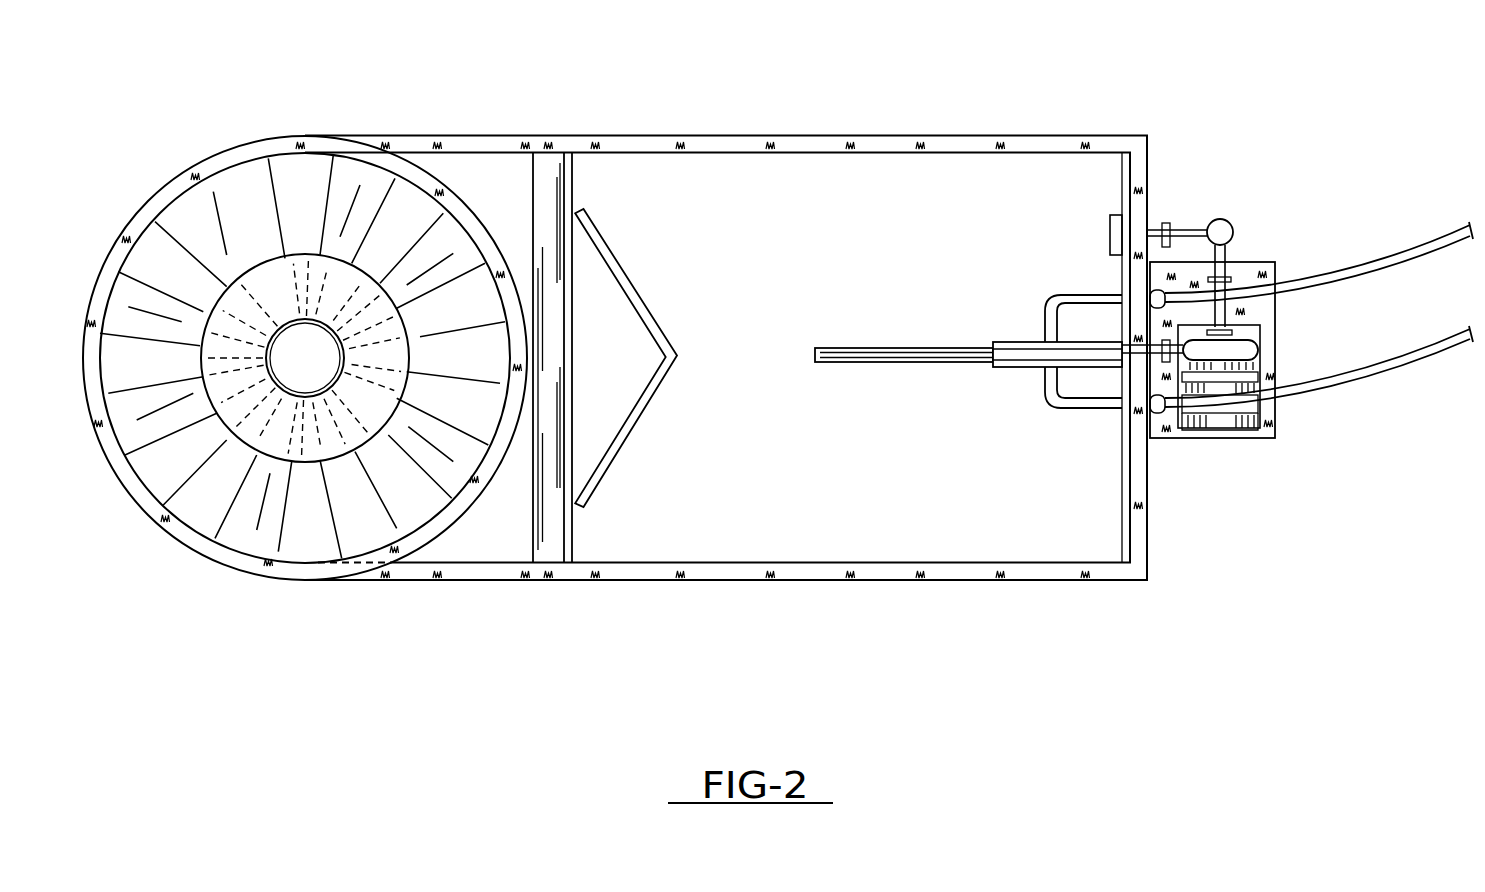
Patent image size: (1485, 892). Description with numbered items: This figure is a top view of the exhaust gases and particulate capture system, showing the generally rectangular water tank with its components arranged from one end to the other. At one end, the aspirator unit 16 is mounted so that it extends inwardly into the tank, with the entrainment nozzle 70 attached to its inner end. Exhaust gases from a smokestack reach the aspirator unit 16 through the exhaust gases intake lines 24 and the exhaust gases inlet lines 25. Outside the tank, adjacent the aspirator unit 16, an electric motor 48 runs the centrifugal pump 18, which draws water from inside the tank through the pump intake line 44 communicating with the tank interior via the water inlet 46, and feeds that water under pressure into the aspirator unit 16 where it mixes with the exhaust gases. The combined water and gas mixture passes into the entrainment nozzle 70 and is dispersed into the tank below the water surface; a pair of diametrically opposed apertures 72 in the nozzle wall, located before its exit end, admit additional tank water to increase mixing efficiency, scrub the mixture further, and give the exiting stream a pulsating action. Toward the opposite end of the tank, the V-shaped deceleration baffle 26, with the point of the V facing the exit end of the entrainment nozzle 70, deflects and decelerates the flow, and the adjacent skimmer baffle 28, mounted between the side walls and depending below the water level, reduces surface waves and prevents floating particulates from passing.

The aspirator unit 16 is at (1008, 365).
The centrifugal pump 18 is at (1260, 348).
The exhaust gases intake lines 24 is at (1432, 245).
The exhaust gases inlet lines 25 is at (1090, 295).
The deceleration baffle 26 is at (647, 322).
The skimmer baffle 28 is at (555, 223).
The pump intake line 44 is at (1186, 230).
The water inlet 46 is at (1116, 235).
The electric motor 48 is at (1207, 423).
The entrainment nozzle 70 is at (843, 362).
The apertures 72 is at (880, 348).